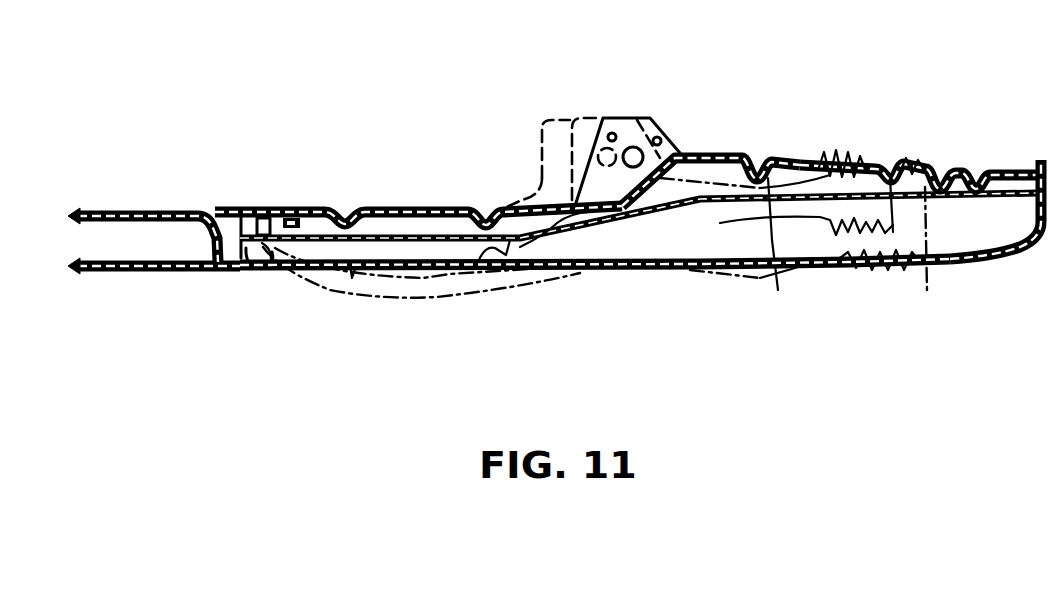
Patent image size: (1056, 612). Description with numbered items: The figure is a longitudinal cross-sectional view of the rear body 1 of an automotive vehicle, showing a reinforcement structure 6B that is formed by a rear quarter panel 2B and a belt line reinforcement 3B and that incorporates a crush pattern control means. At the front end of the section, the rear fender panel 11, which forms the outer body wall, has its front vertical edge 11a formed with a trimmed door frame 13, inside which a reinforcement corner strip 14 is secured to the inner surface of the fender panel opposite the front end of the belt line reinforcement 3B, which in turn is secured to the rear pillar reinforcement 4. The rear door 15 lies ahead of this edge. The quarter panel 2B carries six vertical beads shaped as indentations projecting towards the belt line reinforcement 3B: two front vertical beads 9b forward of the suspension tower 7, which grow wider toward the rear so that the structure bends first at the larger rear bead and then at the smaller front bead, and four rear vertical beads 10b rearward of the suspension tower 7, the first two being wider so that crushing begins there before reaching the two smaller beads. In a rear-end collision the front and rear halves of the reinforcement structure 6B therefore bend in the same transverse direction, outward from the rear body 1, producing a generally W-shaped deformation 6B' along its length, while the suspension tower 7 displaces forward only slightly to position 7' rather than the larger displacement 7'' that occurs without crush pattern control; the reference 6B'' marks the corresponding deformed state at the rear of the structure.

The rear body 1 is at (592, 276).
The rear quarter panel 2B is at (720, 155).
The belt line reinforcement 3B is at (778, 290).
The rear pillar reinforcement 4 is at (278, 222).
The reinforcement structure 6B is at (639, 184).
The W-shaped deformation 6B' is at (421, 302).
The partition web end portion 6B'' is at (911, 272).
The suspension tower 7 is at (627, 119).
The displaced suspension tower position 7' is at (588, 116).
The prior-art displaced suspension tower position 7'' is at (530, 117).
The front vertical beads 9b is at (343, 217).
The rear vertical beads 10b is at (767, 161).
The rear fender panel 11 is at (663, 271).
The front vertical edge 11a is at (213, 232).
The trimmed door frame 13 is at (243, 273).
The reinforcement corner strip 14 is at (263, 271).
The rear door 15 is at (132, 274).